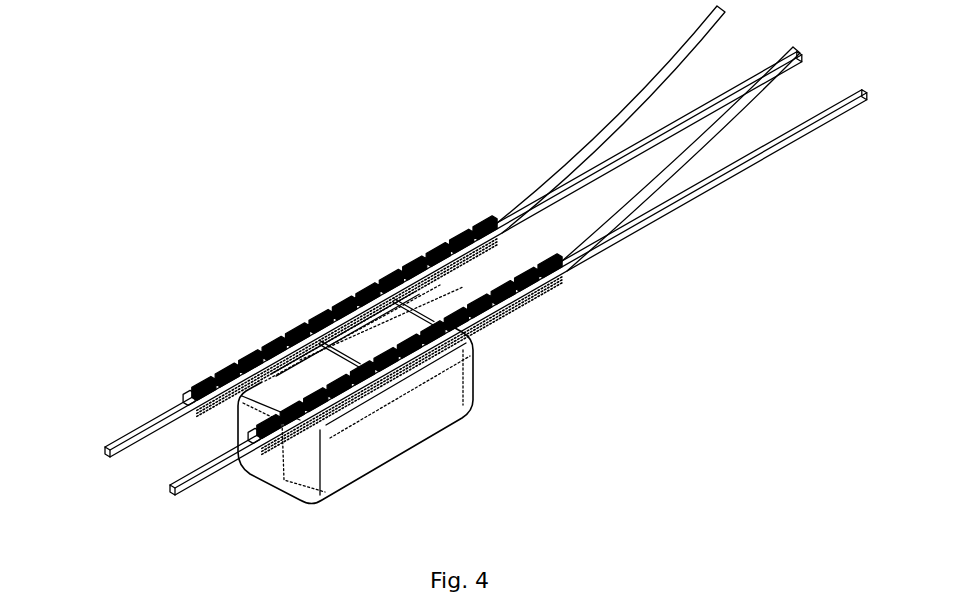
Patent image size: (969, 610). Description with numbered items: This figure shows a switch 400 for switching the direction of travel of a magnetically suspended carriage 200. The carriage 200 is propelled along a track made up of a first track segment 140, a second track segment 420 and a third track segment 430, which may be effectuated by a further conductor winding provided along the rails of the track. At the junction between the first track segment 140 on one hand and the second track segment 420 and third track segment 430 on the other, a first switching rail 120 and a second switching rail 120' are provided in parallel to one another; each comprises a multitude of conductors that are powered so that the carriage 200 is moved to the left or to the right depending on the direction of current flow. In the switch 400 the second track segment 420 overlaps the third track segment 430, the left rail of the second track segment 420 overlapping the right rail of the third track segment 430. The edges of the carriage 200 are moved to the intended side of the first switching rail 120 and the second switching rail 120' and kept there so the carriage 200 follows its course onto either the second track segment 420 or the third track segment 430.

The switch 400 is at (307, 260).
The third track segment 430 is at (643, 90).
The second track segment 420 is at (815, 148).
The first track segment 140 is at (132, 430).
The first switching rail 120 is at (340, 316).
The second switching rail 120' is at (427, 354).
The carriage 200 is at (387, 443).